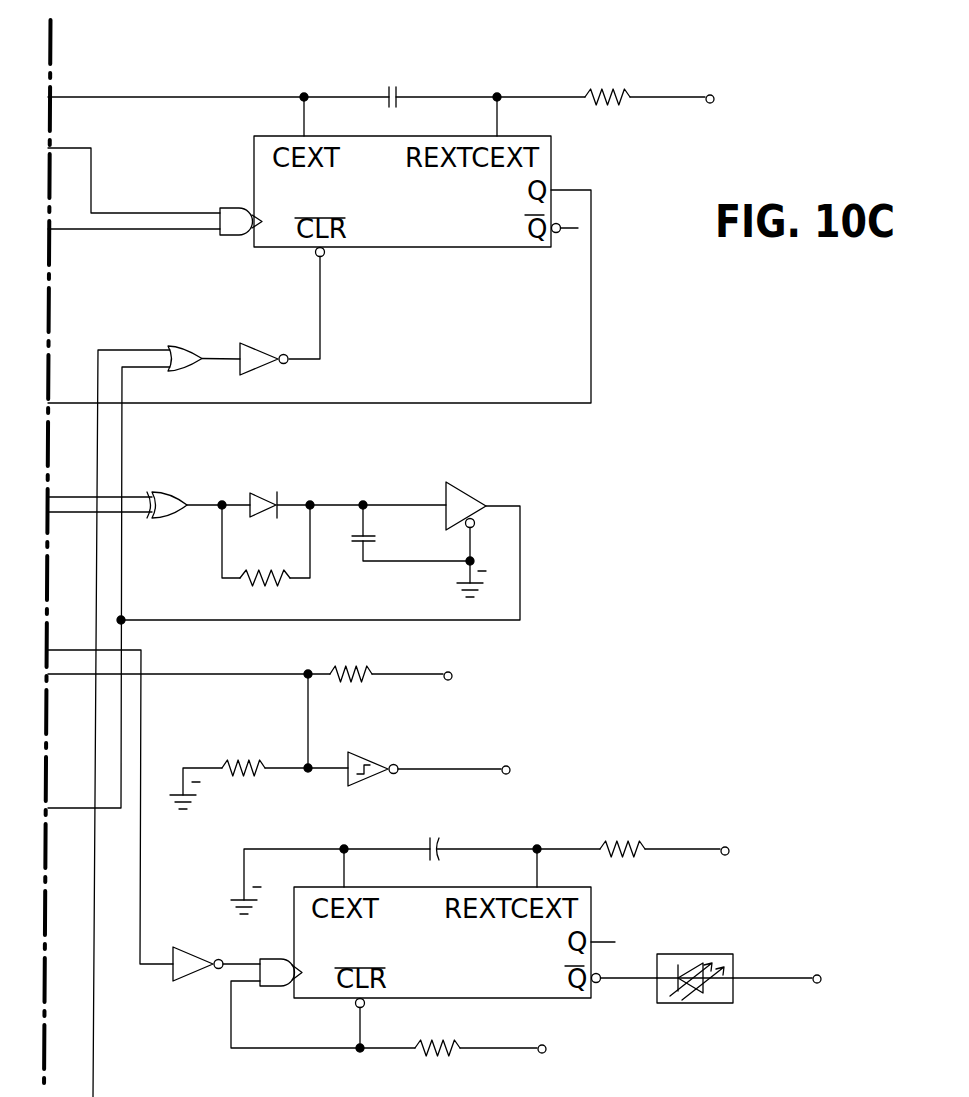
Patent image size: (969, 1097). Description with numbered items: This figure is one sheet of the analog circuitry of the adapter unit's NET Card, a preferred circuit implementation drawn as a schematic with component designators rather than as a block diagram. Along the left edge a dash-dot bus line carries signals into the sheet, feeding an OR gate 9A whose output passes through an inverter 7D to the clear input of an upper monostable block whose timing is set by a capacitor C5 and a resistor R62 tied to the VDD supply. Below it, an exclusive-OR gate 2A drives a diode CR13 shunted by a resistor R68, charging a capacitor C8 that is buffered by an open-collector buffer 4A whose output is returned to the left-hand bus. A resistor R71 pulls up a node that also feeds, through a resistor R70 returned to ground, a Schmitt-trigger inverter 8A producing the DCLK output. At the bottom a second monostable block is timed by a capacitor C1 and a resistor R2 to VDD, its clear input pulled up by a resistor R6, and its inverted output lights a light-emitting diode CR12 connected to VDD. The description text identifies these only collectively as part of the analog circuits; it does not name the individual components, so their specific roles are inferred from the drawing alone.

The timing capacitor C5 is at (392, 82).
The timing resistor R62 is at (649, 81).
The OR gate 9A is at (187, 344).
The inverter 7D is at (265, 346).
The exclusive-OR gate 2A is at (168, 491).
The diode CR13 is at (272, 491).
The resistor R68 is at (266, 545).
The capacitor C8 is at (411, 533).
The buffer with open collector output 4A is at (469, 526).
The pull-up resistor R71 is at (391, 658).
The resistor R70 is at (259, 768).
The Schmitt trigger inverter 8A is at (429, 757).
The timing capacitor C1 is at (436, 835).
The timing resistor R2 is at (664, 833).
The light emitting diode CR12 is at (739, 966).
The pull-up resistor R6 is at (453, 1033).